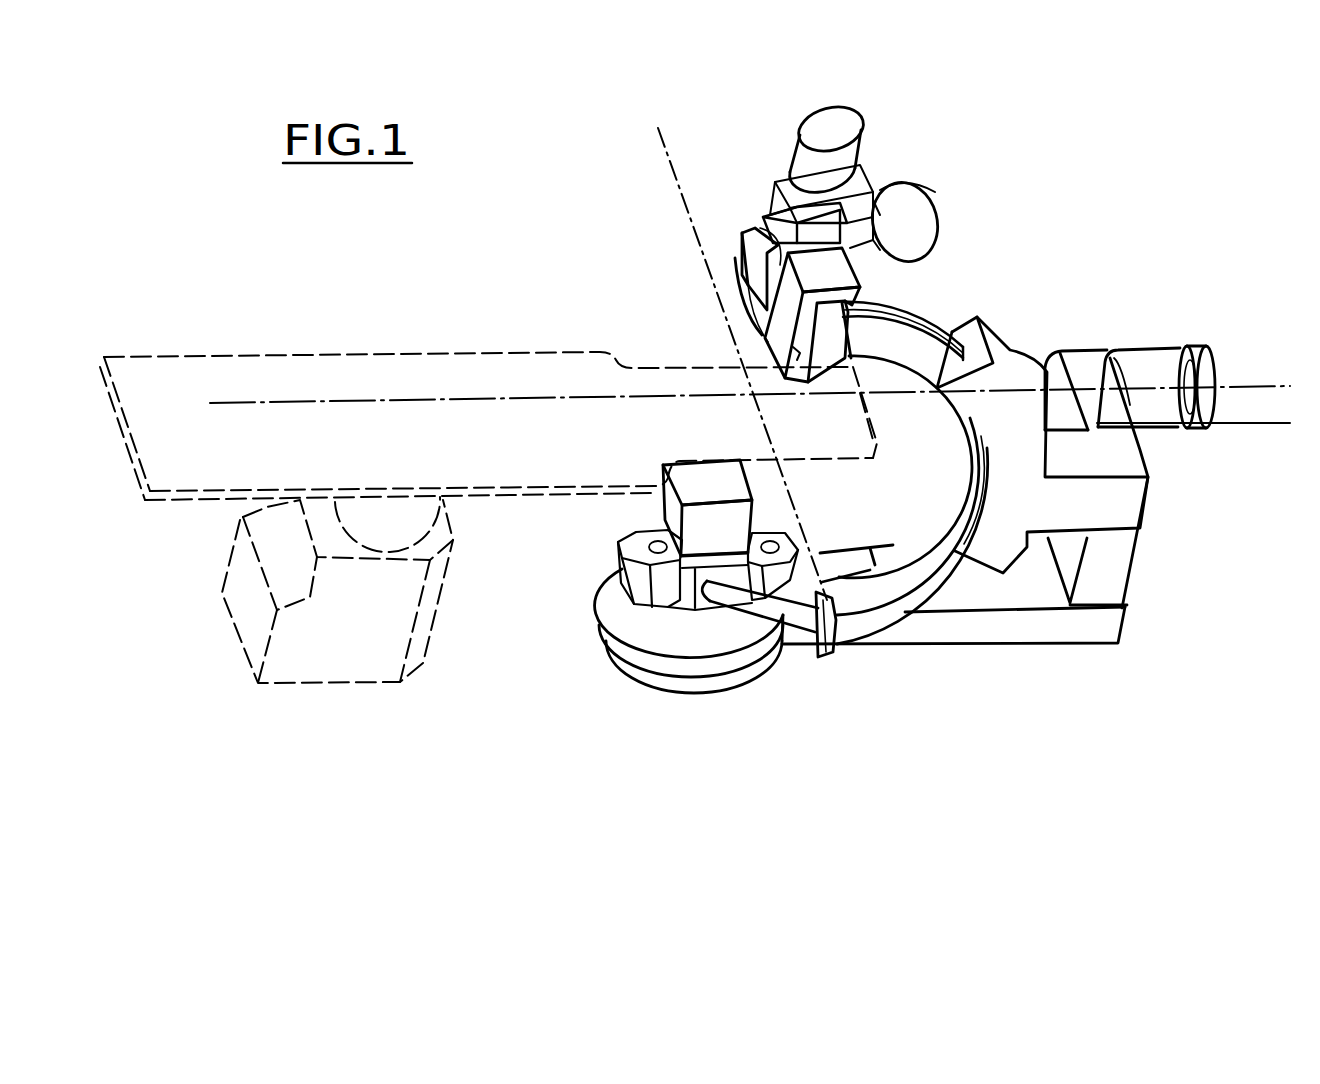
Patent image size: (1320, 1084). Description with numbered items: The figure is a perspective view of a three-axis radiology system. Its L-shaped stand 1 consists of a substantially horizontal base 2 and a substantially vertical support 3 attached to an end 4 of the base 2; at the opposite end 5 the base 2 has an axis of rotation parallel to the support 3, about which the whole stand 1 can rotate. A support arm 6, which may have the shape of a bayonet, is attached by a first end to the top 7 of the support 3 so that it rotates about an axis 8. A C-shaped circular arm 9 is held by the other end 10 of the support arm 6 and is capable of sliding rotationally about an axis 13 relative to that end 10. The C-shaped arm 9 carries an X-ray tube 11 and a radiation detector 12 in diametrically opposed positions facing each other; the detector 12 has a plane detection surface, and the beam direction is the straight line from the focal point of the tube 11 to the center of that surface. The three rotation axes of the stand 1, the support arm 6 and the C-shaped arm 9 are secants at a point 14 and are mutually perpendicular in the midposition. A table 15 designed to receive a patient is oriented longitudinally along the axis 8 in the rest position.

The L-shaped stand 1 is at (899, 636).
The base 2 is at (910, 634).
The support 3 is at (1128, 570).
The end 4 is at (1125, 630).
The opposite end 5 is at (673, 697).
The support arm 6 is at (1050, 365).
The top 7 is at (1143, 360).
The axis 8 is at (1233, 392).
The C-shaped circular arm 9 is at (918, 325).
The end 10 is at (993, 493).
The X-ray tube 11 is at (747, 517).
The radiation detector 12 is at (745, 262).
The axis 13 is at (658, 128).
The point 14 is at (765, 366).
The table 15 is at (485, 360).